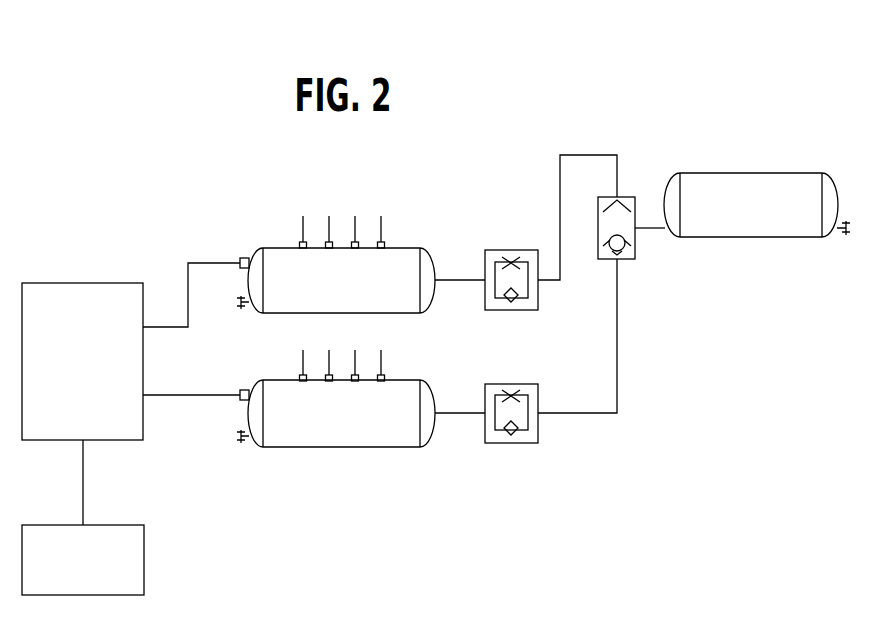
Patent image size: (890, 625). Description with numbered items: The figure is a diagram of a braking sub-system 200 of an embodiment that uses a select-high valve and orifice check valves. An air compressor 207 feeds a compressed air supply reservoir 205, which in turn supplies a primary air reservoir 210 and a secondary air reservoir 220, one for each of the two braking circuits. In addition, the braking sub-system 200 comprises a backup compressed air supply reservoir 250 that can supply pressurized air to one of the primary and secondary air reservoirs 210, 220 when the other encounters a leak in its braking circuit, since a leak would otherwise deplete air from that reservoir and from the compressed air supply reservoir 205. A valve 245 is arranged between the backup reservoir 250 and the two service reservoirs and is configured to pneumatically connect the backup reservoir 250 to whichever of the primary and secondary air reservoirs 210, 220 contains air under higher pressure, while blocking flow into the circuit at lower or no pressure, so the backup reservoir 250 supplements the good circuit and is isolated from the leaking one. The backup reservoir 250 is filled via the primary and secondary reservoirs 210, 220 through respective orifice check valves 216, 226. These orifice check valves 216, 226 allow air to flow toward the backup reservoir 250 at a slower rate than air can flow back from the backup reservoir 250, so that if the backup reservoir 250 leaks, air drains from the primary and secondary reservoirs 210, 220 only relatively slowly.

The braking sub-system 200 is at (676, 106).
The compressed air supply reservoir 205 is at (124, 283).
The air compressor 207 is at (120, 525).
The primary air reservoir 210 is at (400, 248).
The orifice check valve 216 is at (522, 310).
The secondary air reservoir 220 is at (396, 447).
The orifice check valve 226 is at (520, 443).
The valve 245 is at (637, 246).
The backup compressed air supply reservoir 250 is at (780, 173).